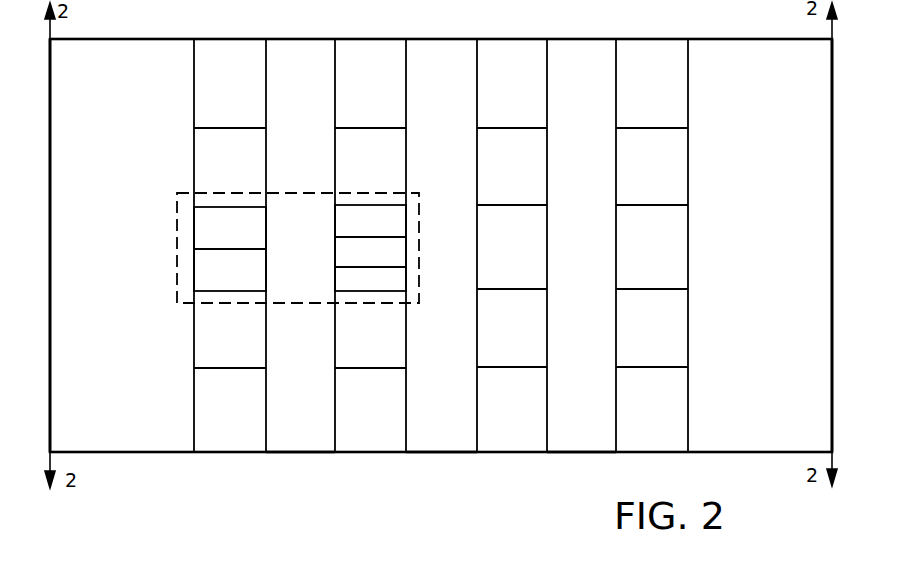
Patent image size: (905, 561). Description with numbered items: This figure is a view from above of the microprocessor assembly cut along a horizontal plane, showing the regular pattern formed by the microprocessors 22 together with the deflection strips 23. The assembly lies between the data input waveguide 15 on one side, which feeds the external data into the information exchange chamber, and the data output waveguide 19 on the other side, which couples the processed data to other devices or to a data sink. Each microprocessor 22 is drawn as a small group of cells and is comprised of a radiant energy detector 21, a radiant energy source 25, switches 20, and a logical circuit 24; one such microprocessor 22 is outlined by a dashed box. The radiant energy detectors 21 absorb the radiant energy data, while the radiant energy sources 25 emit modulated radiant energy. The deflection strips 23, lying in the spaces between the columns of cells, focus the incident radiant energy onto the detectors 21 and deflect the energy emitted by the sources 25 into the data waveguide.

The data input waveguide 15 is at (87, 245).
The data output waveguide 19 is at (789, 245).
The switches 20 is at (300, 237).
The radiant energy detector 21 is at (230, 270).
The microprocessor 22 is at (303, 205).
The deflection strips 23 is at (441, 428).
The logical circuit 24 is at (370, 221).
The radiant energy source 25 is at (370, 279).